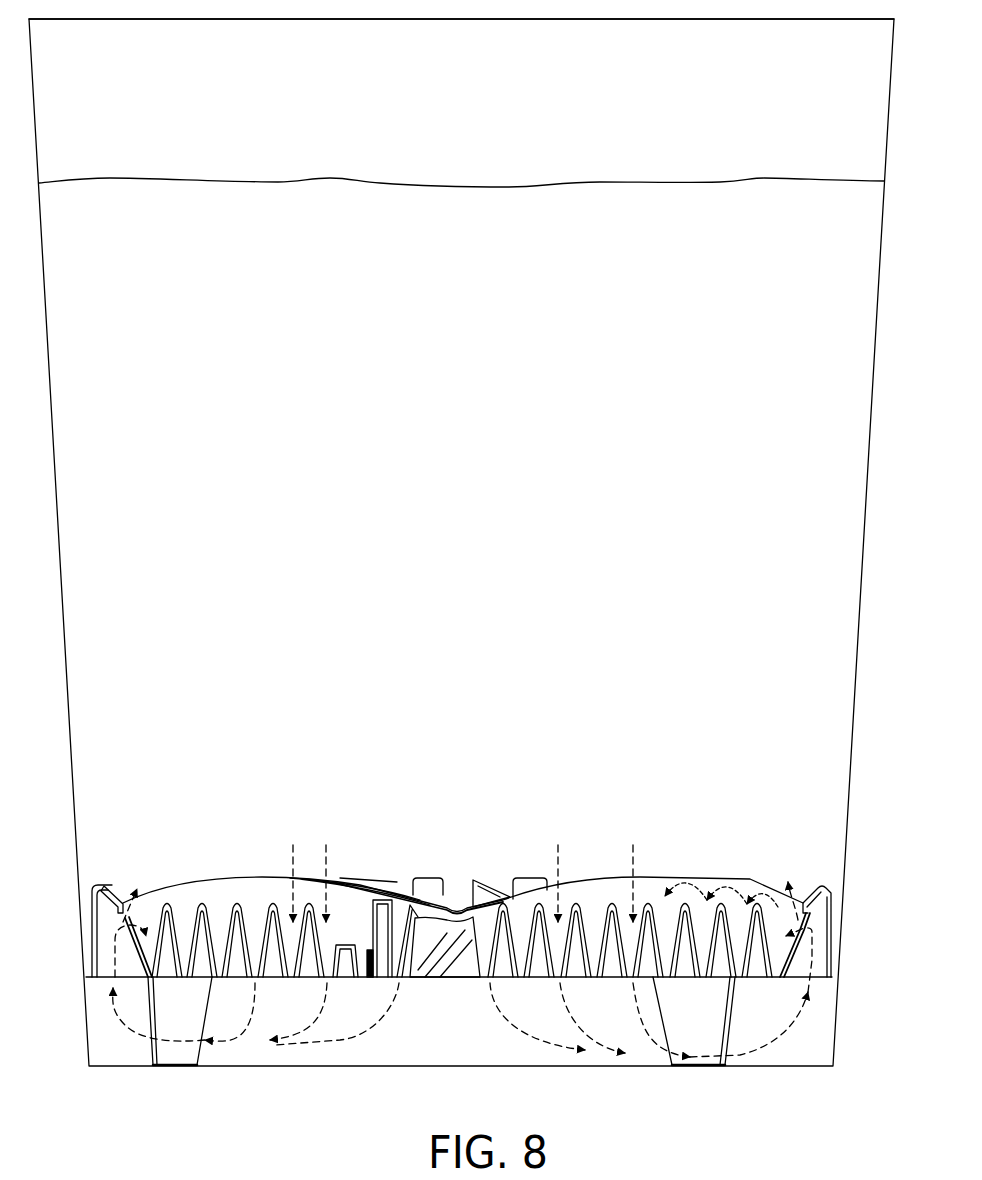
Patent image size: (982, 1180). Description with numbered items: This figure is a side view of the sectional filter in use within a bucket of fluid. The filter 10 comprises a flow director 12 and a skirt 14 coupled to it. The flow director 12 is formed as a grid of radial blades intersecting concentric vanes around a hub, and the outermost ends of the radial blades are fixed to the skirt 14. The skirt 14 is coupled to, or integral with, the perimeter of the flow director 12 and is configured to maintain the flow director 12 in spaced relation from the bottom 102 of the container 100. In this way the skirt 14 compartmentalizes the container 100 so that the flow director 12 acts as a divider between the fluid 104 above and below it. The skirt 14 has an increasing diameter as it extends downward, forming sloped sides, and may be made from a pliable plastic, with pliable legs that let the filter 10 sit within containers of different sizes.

The filter 10 is at (178, 853).
The flow director 12 is at (431, 896).
The skirt 14 is at (836, 897).
The container 100 is at (267, 123).
The bottom 102 is at (770, 1067).
The fluid 104 is at (267, 313).